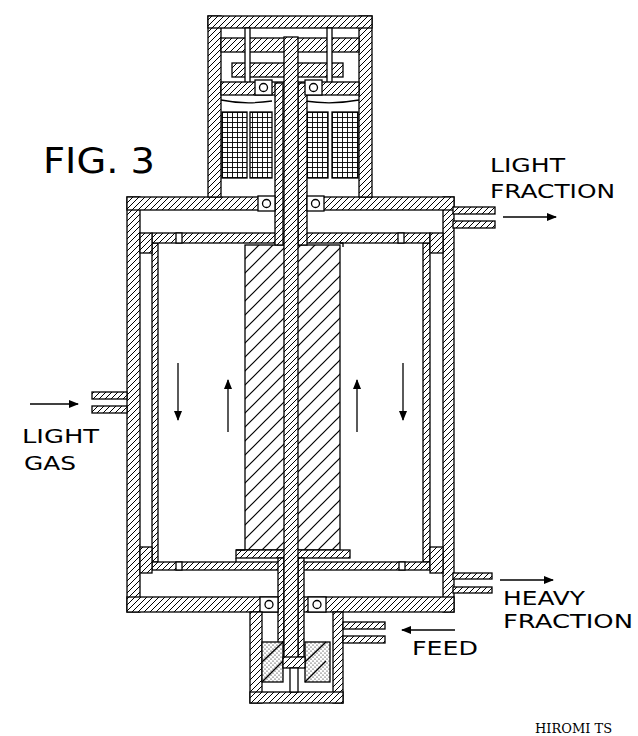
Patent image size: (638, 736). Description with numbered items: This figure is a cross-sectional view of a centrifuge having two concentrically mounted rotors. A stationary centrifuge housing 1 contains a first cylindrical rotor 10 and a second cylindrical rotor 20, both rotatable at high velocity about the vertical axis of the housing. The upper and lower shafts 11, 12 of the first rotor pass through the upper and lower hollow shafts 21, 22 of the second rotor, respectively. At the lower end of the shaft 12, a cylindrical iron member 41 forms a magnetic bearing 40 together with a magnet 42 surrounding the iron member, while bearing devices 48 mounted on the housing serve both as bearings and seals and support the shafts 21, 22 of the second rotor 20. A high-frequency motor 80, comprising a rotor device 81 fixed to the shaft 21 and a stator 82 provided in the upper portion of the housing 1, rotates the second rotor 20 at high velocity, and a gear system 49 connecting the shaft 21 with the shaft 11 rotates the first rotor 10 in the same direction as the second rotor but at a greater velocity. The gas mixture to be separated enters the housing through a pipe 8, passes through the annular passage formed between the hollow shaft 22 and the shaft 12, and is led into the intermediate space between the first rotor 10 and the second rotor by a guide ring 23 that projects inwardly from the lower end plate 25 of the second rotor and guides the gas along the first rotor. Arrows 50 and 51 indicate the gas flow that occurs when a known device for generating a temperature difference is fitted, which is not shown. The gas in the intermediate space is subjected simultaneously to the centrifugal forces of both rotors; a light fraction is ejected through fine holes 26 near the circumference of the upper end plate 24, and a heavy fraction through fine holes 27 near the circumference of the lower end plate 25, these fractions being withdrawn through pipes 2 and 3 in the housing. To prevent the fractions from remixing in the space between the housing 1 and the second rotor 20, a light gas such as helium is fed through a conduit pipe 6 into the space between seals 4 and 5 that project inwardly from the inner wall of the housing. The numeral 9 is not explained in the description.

The centrifuge housing 1 is at (127, 300).
The pipe 2 is at (470, 207).
The pipe 3 is at (490, 573).
The seal 4 is at (144, 236).
The seal 5 is at (147, 572).
The conduit pipe 6 is at (103, 392).
The pipe 8 is at (367, 643).
The lower shaft sleeve 9 is at (284, 583).
The first cylindrical rotor 10 is at (325, 345).
The upper shaft 11 is at (308, 222).
The lower shaft 12 is at (251, 638).
The second cylindrical rotor 20 is at (158, 335).
The upper hollow shaft 21 is at (343, 247).
The lower hollow shaft 22 is at (305, 583).
The guide ring 23 is at (235, 553).
The upper end plate 24 is at (218, 245).
The lower end plate 25 is at (291, 580).
The fine holes 26 is at (179, 245).
The fine holes 27 is at (180, 562).
The magnetic bearing 40 is at (322, 691).
The cylindrical iron member 41 is at (296, 692).
The magnet 42 is at (253, 668).
The bearing devices 48 is at (257, 101).
The gear system 49 is at (352, 57).
The arrows 50 is at (227, 430).
The arrows 51 is at (197, 381).
The high-frequency motor 80 is at (355, 152).
The rotor device 81 is at (345, 100).
The stator 82 is at (348, 135).